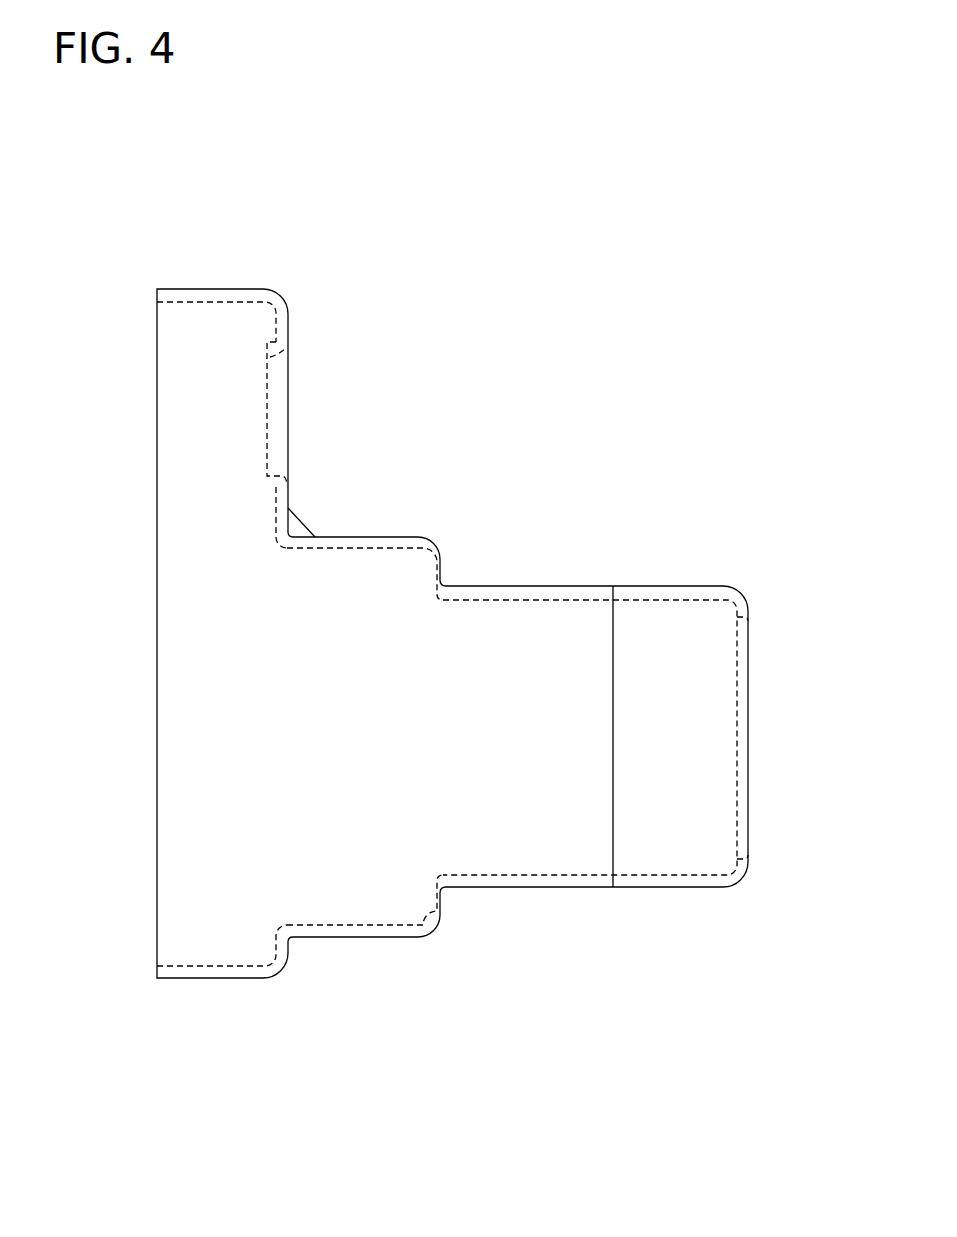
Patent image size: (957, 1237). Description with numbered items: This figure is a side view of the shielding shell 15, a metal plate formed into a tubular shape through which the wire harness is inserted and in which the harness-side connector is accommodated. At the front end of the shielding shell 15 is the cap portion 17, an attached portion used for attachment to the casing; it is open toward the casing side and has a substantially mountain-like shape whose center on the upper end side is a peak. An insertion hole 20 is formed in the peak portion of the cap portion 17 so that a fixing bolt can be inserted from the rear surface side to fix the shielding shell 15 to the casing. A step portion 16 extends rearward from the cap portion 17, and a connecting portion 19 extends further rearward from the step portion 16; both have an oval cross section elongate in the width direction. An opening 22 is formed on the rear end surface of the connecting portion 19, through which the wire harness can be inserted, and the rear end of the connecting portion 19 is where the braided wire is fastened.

The shielding shell 15 is at (166, 271).
The step portion 16 is at (355, 907).
The cap portion 17 is at (213, 940).
The connecting portion 19 is at (529, 865).
The insertion hole 20 is at (280, 373).
The opening 22 is at (747, 640).